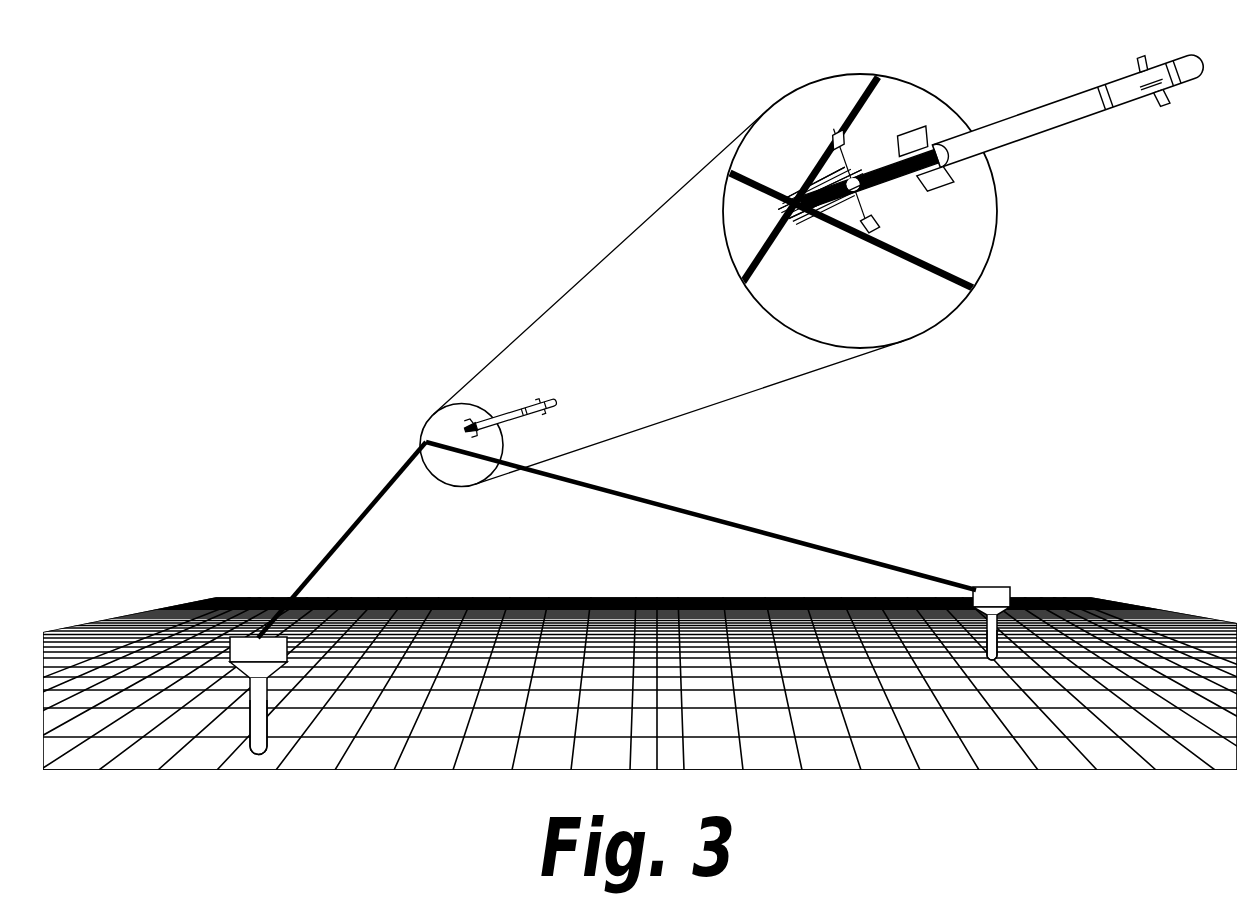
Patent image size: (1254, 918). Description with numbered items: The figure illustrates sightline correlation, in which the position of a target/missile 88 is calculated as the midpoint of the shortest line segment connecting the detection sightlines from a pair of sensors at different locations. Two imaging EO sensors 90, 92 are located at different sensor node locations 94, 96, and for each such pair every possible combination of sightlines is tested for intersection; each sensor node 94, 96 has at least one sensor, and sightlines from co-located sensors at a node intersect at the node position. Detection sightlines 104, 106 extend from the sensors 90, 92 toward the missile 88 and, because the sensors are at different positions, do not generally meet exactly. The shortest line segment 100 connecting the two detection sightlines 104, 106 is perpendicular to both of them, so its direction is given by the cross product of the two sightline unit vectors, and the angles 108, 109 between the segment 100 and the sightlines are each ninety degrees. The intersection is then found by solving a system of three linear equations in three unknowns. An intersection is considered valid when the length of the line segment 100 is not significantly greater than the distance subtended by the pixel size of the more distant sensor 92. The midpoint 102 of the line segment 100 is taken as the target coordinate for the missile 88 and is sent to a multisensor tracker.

The target/missile 88 is at (502, 412).
The imaging EO sensor 90 is at (255, 637).
The imaging EO sensor 92 is at (993, 587).
The sensor node location 94 is at (267, 745).
The sensor node location 96 is at (973, 660).
The shortest line segment 100 is at (832, 220).
The midpoint 102 is at (845, 175).
The detection sightline 104 is at (337, 545).
The detection sightline 106 is at (670, 497).
The angle 108 is at (852, 133).
The angle 109 is at (880, 230).